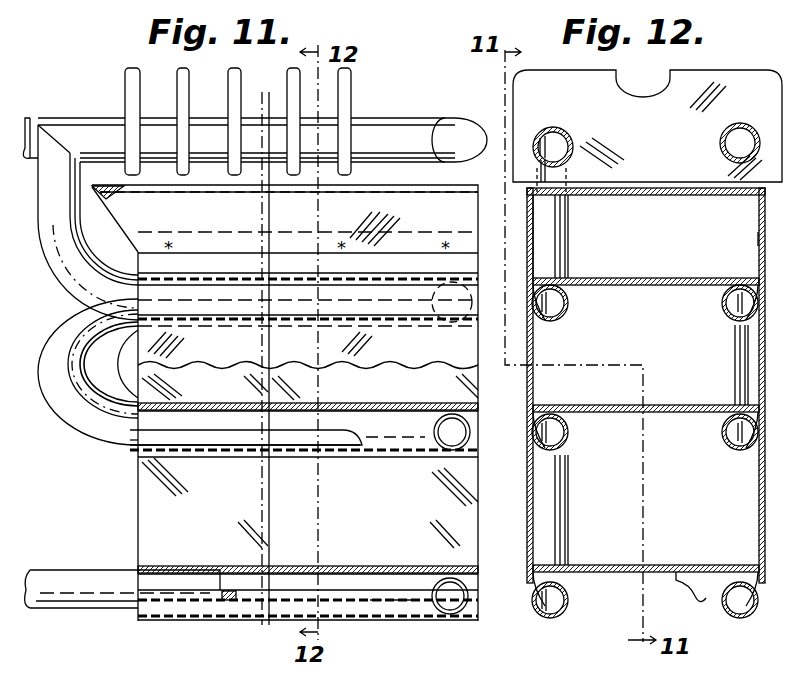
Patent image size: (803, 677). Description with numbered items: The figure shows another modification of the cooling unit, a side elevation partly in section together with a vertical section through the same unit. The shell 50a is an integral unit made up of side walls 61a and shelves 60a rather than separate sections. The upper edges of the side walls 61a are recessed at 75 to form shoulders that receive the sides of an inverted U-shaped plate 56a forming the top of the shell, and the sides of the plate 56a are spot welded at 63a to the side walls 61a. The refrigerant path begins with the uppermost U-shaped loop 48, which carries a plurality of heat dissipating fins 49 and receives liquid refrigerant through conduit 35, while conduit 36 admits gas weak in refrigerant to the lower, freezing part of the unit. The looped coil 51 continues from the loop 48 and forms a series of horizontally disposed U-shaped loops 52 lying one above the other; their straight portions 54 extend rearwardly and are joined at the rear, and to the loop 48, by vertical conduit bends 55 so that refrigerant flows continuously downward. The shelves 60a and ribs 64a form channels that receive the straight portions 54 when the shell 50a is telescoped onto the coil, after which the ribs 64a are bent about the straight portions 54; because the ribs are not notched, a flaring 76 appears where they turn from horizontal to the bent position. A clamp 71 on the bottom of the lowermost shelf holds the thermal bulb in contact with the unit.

In FIG. 11, the conduit 35 is at (30, 118).
In FIG. 11, the conduit 36 is at (57, 578).
In FIG. 11, the U-shaped loop 48 is at (378, 118).
In FIG. 12, the U-shaped loop 48 is at (736, 124).
In FIG. 11, the fins 49 is at (125, 74).
In FIG. 12, the fins 49 is at (766, 74).
In FIG. 12, the shell 50a is at (522, 477).
In FIG. 11, the looped coil 51 is at (112, 460).
In FIG. 11, the U-shaped loops 52 is at (406, 448).
In FIG. 11, the straight portions 54 is at (210, 418).
In FIG. 12, the straight portions 54 is at (562, 296).
In FIG. 11, the vertical conduit bends 55 is at (70, 424).
In FIG. 12, the vertical conduit bends 55 is at (566, 250).
In FIG. 12, the inverted U-shaped plate 56a is at (634, 196).
In FIG. 11, the shelves 60a is at (366, 403).
In FIG. 12, the shelves 60a is at (660, 278).
In FIG. 12, the side walls 61a is at (760, 345).
In FIG. 11, the spot welds 63a is at (172, 246).
In FIG. 11, the ribs 64a is at (200, 456).
In FIG. 12, the ribs 64a is at (560, 322).
In FIG. 11, the clamp 71 is at (232, 600).
In FIG. 12, the clamp 71 is at (698, 600).
In FIG. 12, the recess 75 is at (756, 242).
In FIG. 11, the flaring 76 is at (354, 456).